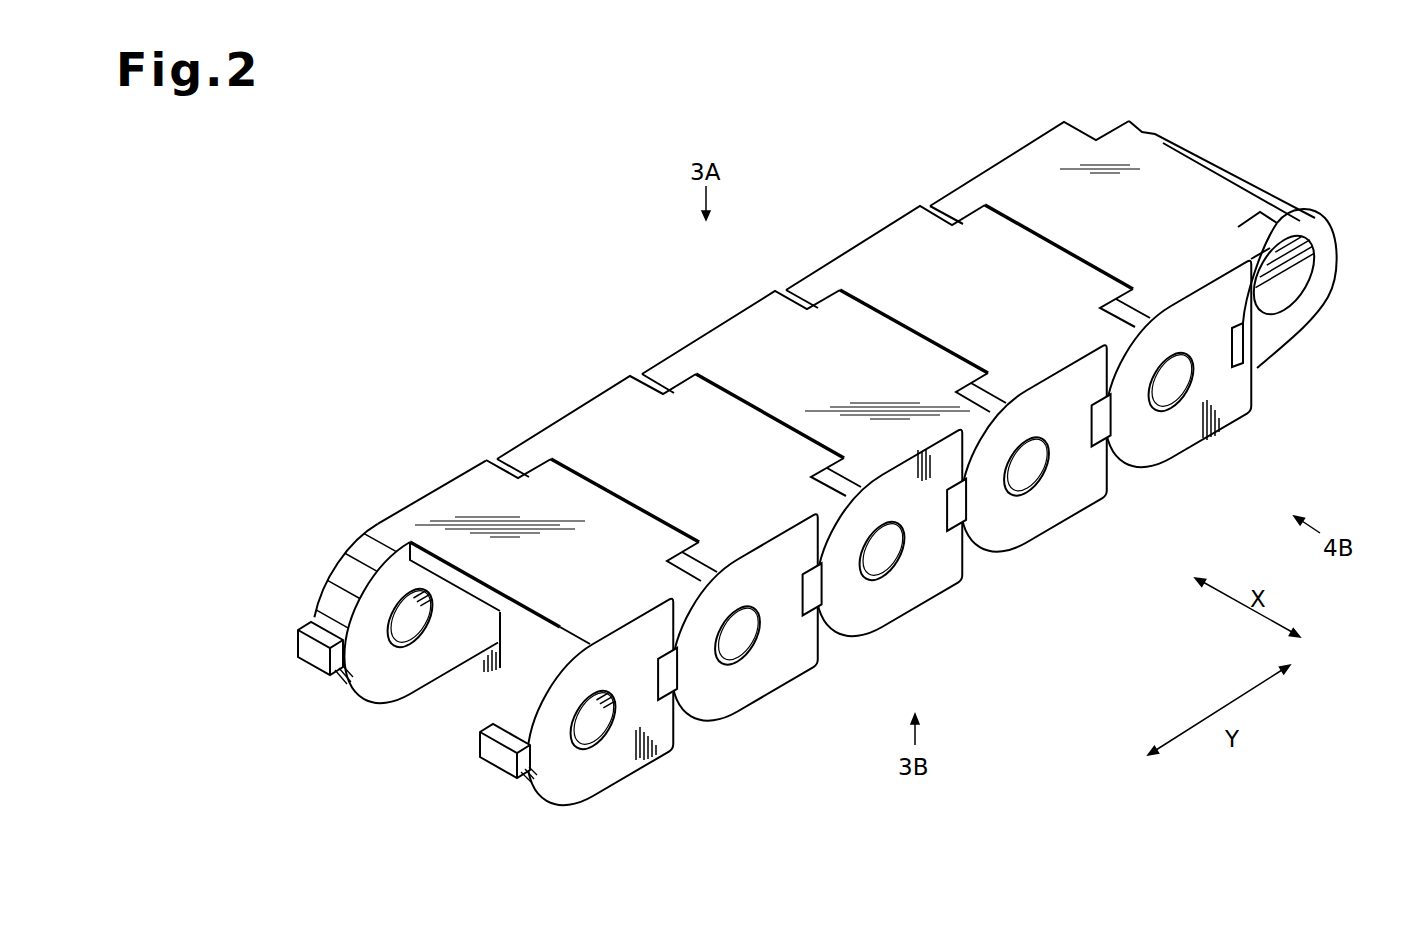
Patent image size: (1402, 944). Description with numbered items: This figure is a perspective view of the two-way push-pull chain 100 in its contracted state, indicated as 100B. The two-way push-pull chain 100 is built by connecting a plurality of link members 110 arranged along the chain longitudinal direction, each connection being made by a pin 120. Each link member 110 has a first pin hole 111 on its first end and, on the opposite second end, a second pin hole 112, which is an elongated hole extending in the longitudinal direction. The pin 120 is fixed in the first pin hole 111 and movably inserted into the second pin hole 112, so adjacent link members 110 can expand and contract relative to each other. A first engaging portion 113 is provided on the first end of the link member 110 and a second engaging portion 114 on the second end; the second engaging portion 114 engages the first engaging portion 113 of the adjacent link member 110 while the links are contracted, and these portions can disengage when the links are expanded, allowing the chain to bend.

The two-way push-pull chain 100 is at (837, 469).
The two-way push-pull chain in contracted state 100B is at (412, 178).
The link member 110 is at (598, 425).
The first pin hole 111 is at (589, 728).
The second pin hole 112 is at (1284, 282).
The first engaging portion 113 is at (502, 760).
The second engaging portion 114 is at (1246, 364).
The pin 120 is at (896, 558).